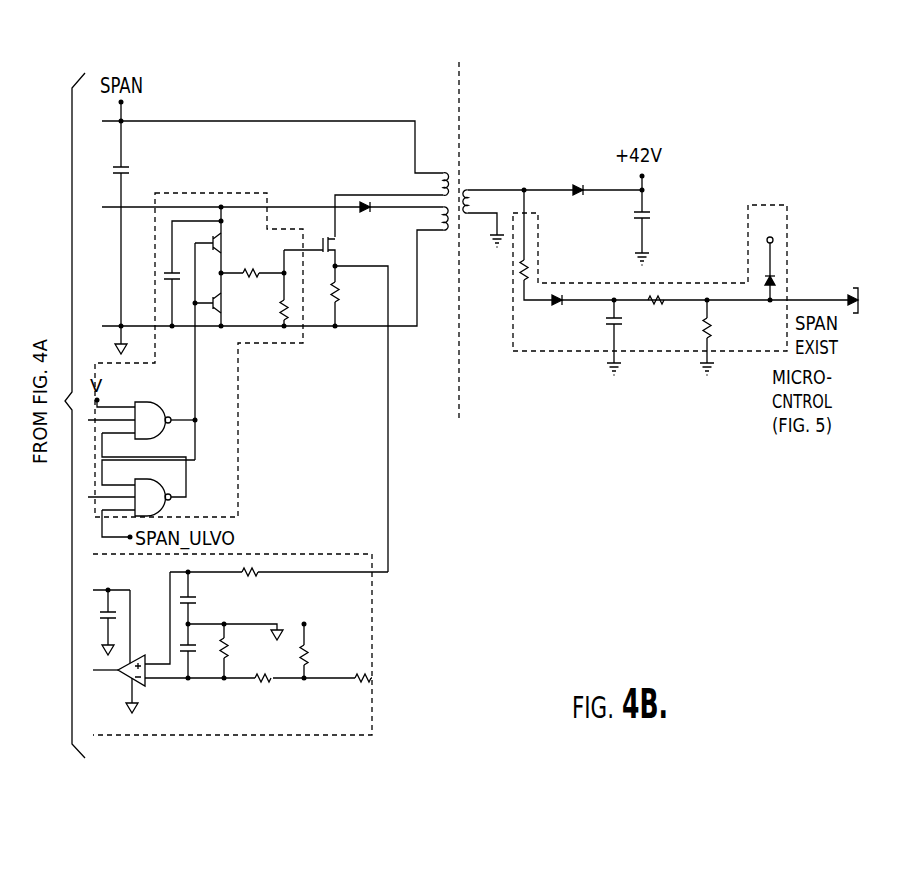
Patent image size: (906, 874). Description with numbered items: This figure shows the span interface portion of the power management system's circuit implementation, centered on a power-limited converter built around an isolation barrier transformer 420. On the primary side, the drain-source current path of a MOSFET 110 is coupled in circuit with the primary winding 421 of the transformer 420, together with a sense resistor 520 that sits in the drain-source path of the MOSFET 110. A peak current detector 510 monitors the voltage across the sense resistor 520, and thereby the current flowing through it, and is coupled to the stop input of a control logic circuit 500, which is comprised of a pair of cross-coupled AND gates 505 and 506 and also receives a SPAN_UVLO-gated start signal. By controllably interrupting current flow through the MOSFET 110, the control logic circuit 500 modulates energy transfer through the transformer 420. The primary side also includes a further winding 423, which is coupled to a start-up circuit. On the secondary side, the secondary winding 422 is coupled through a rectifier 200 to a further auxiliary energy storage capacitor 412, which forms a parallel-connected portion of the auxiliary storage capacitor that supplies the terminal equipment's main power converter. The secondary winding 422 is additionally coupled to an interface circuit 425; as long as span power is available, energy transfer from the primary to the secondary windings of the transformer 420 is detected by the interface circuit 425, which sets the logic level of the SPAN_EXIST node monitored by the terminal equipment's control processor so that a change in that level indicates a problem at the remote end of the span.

The MOSFET 110 is at (340, 241).
The rectifier 200 is at (578, 185).
The further auxiliary energy storage capacitor 412 is at (648, 214).
The transformer 420 is at (476, 241).
The primary winding 421 is at (437, 171).
The secondary winding 422 is at (470, 190).
The further winding 423 is at (437, 233).
The interface circuit 425 is at (522, 352).
The control logic circuit 500 is at (218, 193).
The AND gate 505 is at (143, 402).
The AND gate 506 is at (175, 513).
The peak current detector 510 is at (255, 554).
The sense resistor 520 is at (338, 292).